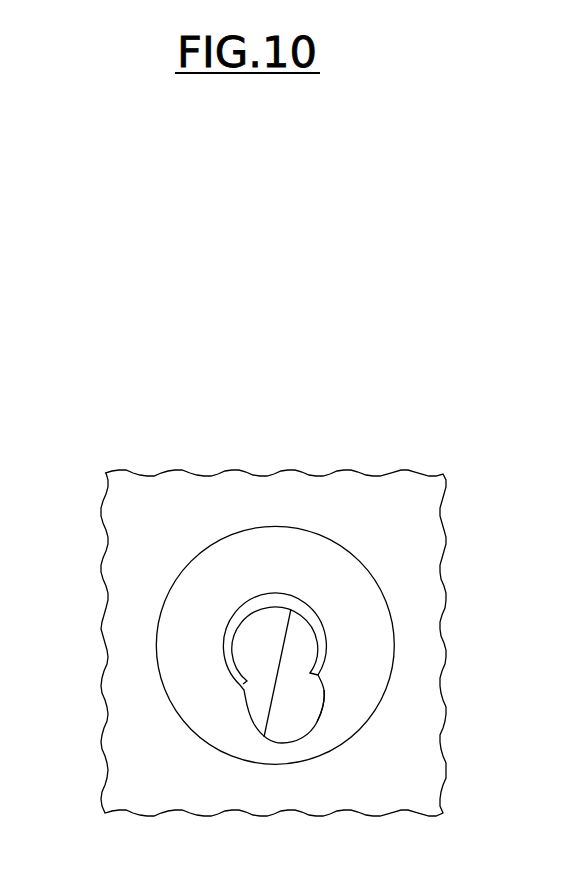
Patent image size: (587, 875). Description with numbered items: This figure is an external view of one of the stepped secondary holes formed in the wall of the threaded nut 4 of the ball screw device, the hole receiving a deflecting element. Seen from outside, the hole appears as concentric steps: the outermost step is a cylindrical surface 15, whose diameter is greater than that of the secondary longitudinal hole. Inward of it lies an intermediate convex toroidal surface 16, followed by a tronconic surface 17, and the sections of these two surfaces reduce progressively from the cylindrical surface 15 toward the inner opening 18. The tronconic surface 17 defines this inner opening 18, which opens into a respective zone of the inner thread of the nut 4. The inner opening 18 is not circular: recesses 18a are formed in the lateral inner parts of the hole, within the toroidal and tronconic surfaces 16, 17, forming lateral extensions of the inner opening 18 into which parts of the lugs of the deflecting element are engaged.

The threaded nut 4 is at (437, 538).
The cylindrical surface 15 is at (384, 599).
The intermediate convex toroidal surface 16 is at (172, 633).
The tronconic surface 17 is at (225, 650).
The inner opening 18 is at (320, 643).
The recess 18a is at (320, 715).